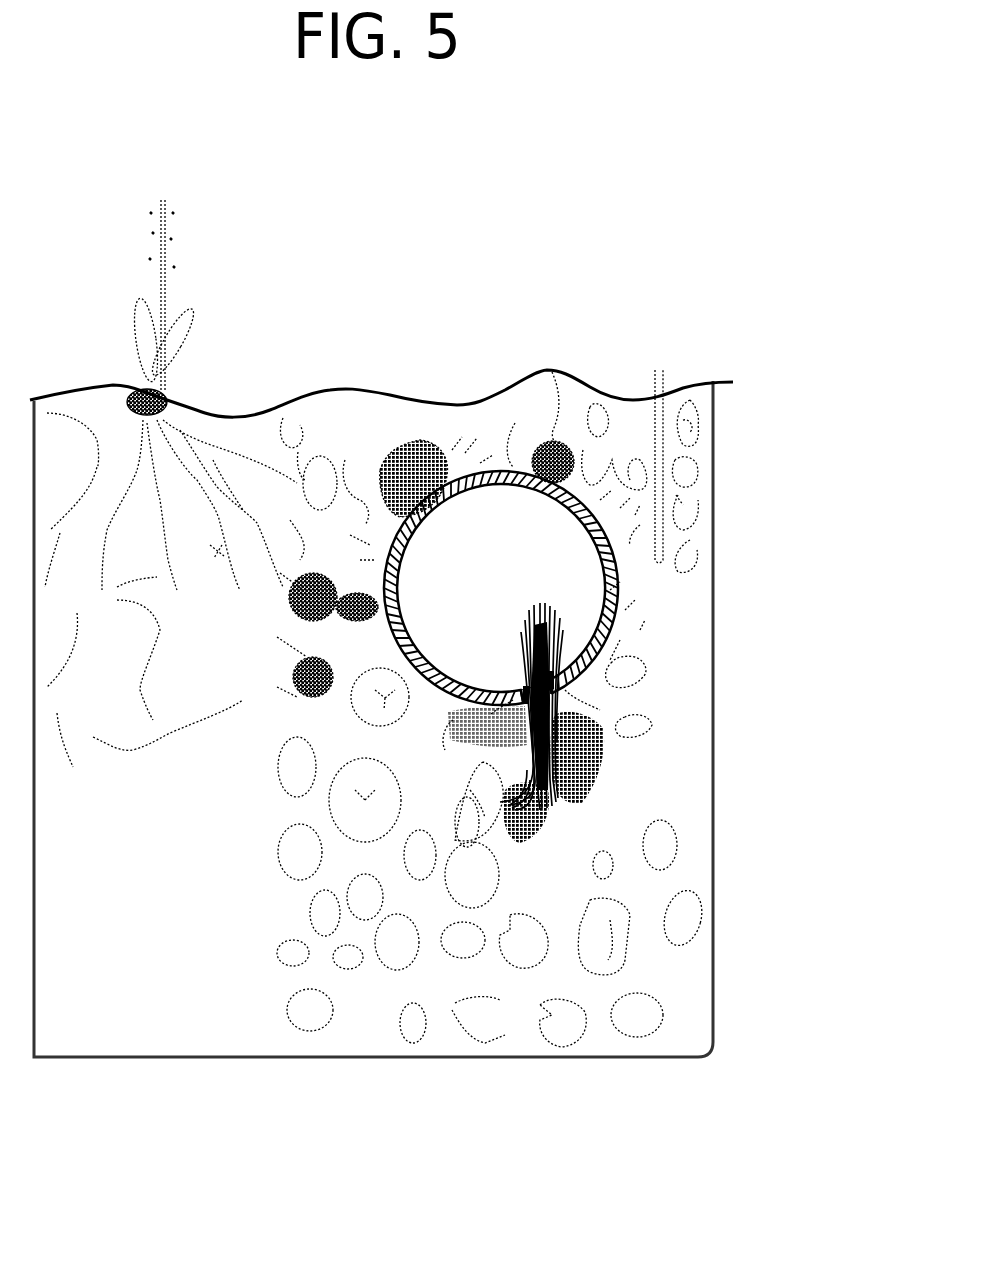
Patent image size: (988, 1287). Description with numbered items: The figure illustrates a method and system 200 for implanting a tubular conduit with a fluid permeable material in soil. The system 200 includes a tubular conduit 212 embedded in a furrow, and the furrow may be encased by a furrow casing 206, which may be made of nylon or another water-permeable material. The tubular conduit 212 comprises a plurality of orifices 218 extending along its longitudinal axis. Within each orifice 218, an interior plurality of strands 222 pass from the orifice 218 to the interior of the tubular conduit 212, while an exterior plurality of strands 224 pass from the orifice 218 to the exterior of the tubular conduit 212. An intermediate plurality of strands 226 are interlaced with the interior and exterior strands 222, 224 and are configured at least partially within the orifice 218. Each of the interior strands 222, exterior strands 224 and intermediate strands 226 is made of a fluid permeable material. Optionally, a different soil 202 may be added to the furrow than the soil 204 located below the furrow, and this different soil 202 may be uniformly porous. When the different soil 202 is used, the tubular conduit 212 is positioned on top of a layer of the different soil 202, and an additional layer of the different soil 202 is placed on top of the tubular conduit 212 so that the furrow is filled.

The system 200 is at (590, 330).
The different soil 202 is at (650, 673).
The soil 204 is at (650, 969).
The furrow casing 206 is at (535, 1063).
The tubular conduit 212 is at (607, 547).
The orifices 218 is at (507, 714).
The interior plurality of strands 222 is at (492, 571).
The exterior plurality of strands 224 is at (558, 809).
The intermediate plurality of strands 226 is at (525, 690).